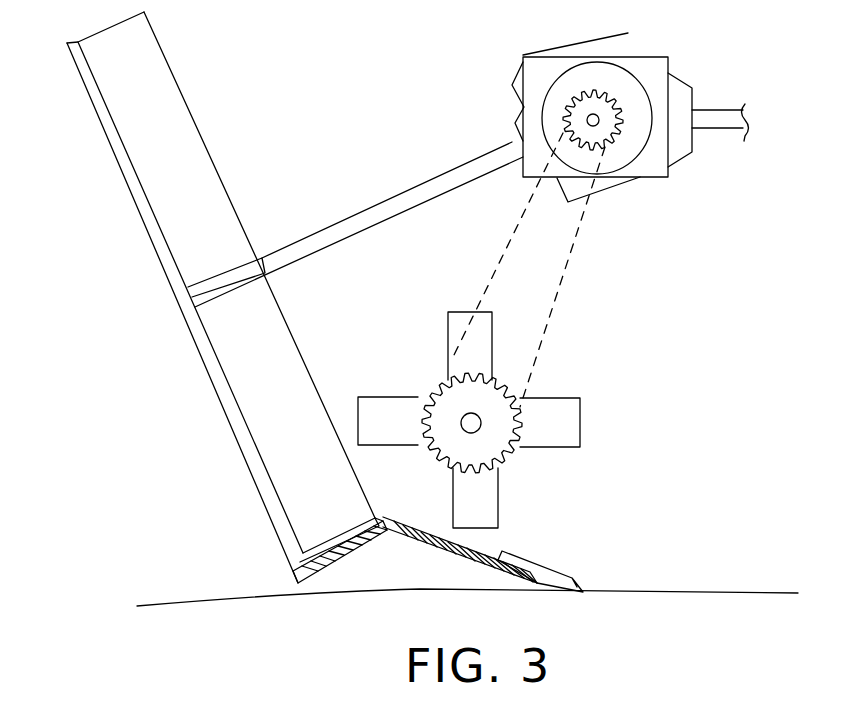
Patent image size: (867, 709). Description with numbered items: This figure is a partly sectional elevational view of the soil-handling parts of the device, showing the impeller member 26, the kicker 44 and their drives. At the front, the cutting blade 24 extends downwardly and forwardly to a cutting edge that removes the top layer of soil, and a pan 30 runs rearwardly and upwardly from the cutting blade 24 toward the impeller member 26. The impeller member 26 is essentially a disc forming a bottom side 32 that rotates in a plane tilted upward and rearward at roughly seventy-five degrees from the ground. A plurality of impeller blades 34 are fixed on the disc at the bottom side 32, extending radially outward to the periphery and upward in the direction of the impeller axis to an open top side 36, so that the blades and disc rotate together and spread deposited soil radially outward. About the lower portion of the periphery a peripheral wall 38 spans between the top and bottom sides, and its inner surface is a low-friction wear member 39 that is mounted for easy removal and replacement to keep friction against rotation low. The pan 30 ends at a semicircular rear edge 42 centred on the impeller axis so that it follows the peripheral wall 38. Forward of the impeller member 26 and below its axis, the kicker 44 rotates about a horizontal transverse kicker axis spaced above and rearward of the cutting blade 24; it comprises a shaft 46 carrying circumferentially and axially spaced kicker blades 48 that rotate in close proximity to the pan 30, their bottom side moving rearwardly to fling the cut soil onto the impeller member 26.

The cutting blade 24 is at (570, 578).
The impeller member 26 is at (222, 339).
The pan 30 is at (478, 553).
The bottom side 32 is at (225, 408).
The impeller blades 34 is at (144, 53).
The open top side 36 is at (310, 303).
The peripheral wall 38 is at (363, 567).
The wear member 39 is at (317, 542).
The rear edge 42 is at (387, 517).
The kicker 44 is at (558, 420).
The shaft 46 is at (473, 423).
The kicker blades 48 is at (570, 407).